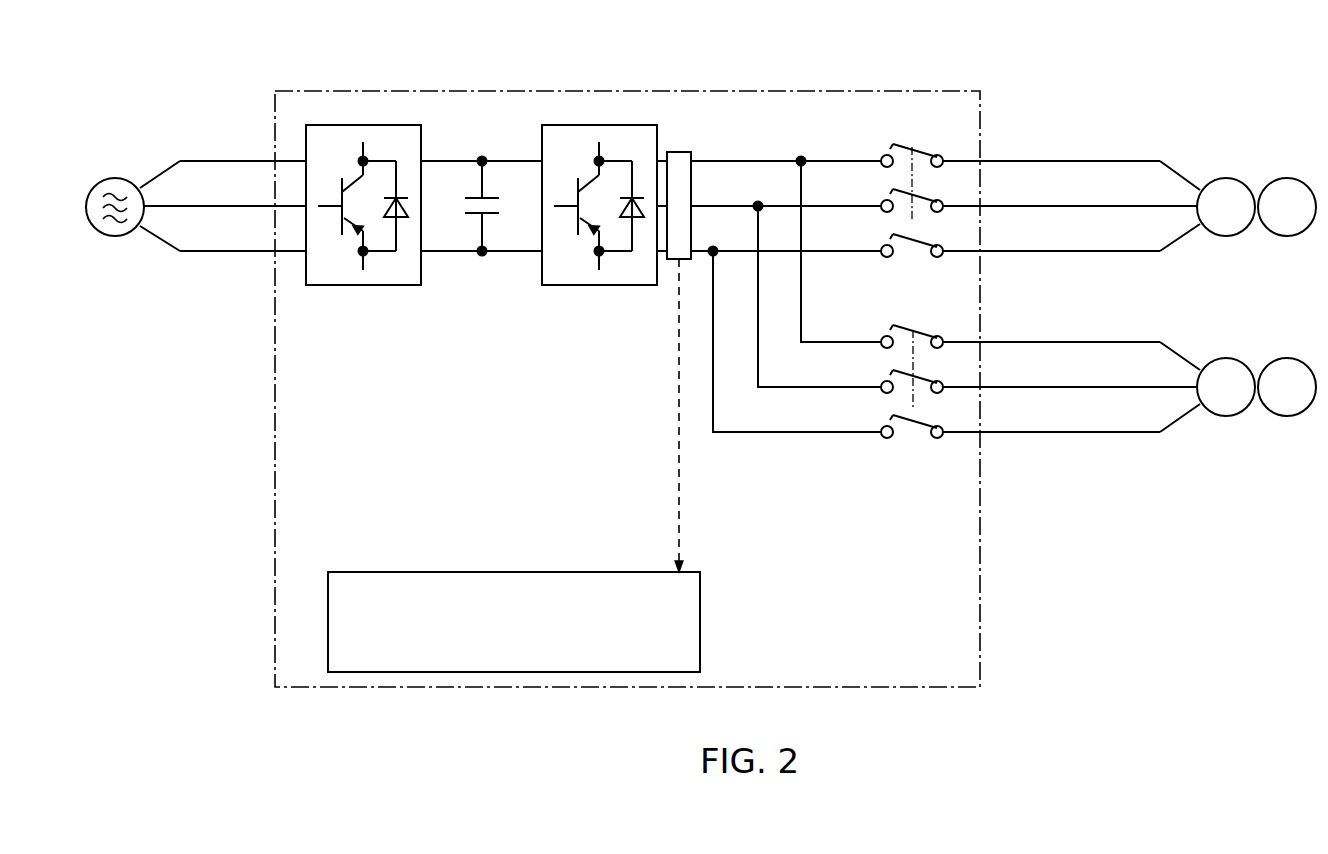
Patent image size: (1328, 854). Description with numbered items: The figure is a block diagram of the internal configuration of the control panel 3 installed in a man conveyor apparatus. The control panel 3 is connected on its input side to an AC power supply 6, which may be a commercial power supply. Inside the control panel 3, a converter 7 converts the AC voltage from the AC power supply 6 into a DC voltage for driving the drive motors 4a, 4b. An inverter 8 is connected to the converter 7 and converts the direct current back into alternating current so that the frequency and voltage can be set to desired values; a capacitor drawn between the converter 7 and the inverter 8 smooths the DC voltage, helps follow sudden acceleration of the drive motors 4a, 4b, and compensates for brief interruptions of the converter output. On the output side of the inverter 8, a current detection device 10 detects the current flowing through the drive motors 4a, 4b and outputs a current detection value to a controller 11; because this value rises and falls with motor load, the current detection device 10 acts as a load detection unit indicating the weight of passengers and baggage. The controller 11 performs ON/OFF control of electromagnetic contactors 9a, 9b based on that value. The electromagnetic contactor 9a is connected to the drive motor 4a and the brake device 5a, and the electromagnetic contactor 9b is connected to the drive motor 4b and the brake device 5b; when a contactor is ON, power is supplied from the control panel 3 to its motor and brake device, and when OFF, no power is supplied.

The control panel 3 is at (408, 91).
The AC power supply 6 is at (115, 178).
The converter 7 is at (327, 287).
The inverter 8 is at (603, 125).
The current detection device 10 is at (683, 152).
The electromagnetic contactor 9a is at (915, 123).
The electromagnetic contactor 9b is at (913, 447).
The drive motor 4a is at (1228, 178).
The brake device 5a is at (1288, 178).
The drive motor 4b is at (1228, 358).
The brake device 5b is at (1288, 358).
The controller 11 is at (328, 595).